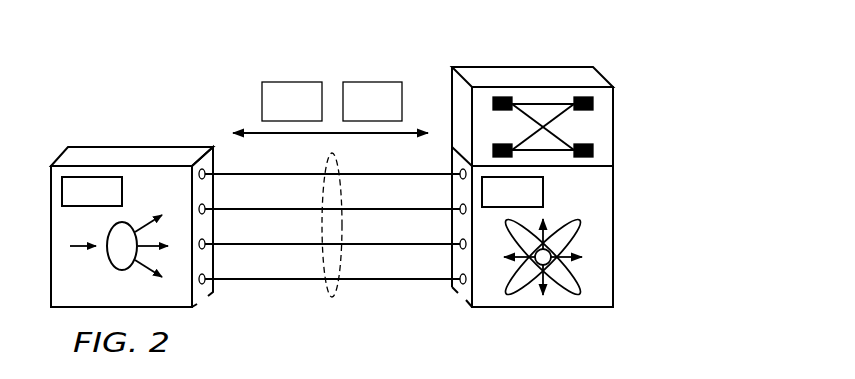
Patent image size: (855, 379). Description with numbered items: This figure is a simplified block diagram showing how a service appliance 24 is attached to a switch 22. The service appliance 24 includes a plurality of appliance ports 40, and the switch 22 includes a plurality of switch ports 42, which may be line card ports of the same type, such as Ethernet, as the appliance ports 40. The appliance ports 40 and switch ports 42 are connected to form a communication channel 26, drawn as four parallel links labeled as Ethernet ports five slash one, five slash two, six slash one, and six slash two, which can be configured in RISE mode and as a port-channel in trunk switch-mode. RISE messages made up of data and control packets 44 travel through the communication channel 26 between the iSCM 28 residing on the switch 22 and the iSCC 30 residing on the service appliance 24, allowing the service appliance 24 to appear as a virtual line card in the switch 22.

The switch 22 is at (559, 62).
The service appliance 24 is at (111, 146).
The communication channel 26 is at (332, 297).
The iSCM 28 is at (543, 192).
The iSCC 30 is at (122, 192).
The appliance ports 40 is at (203, 298).
The switch ports 42 is at (462, 294).
The data and control packets 44 is at (246, 100).